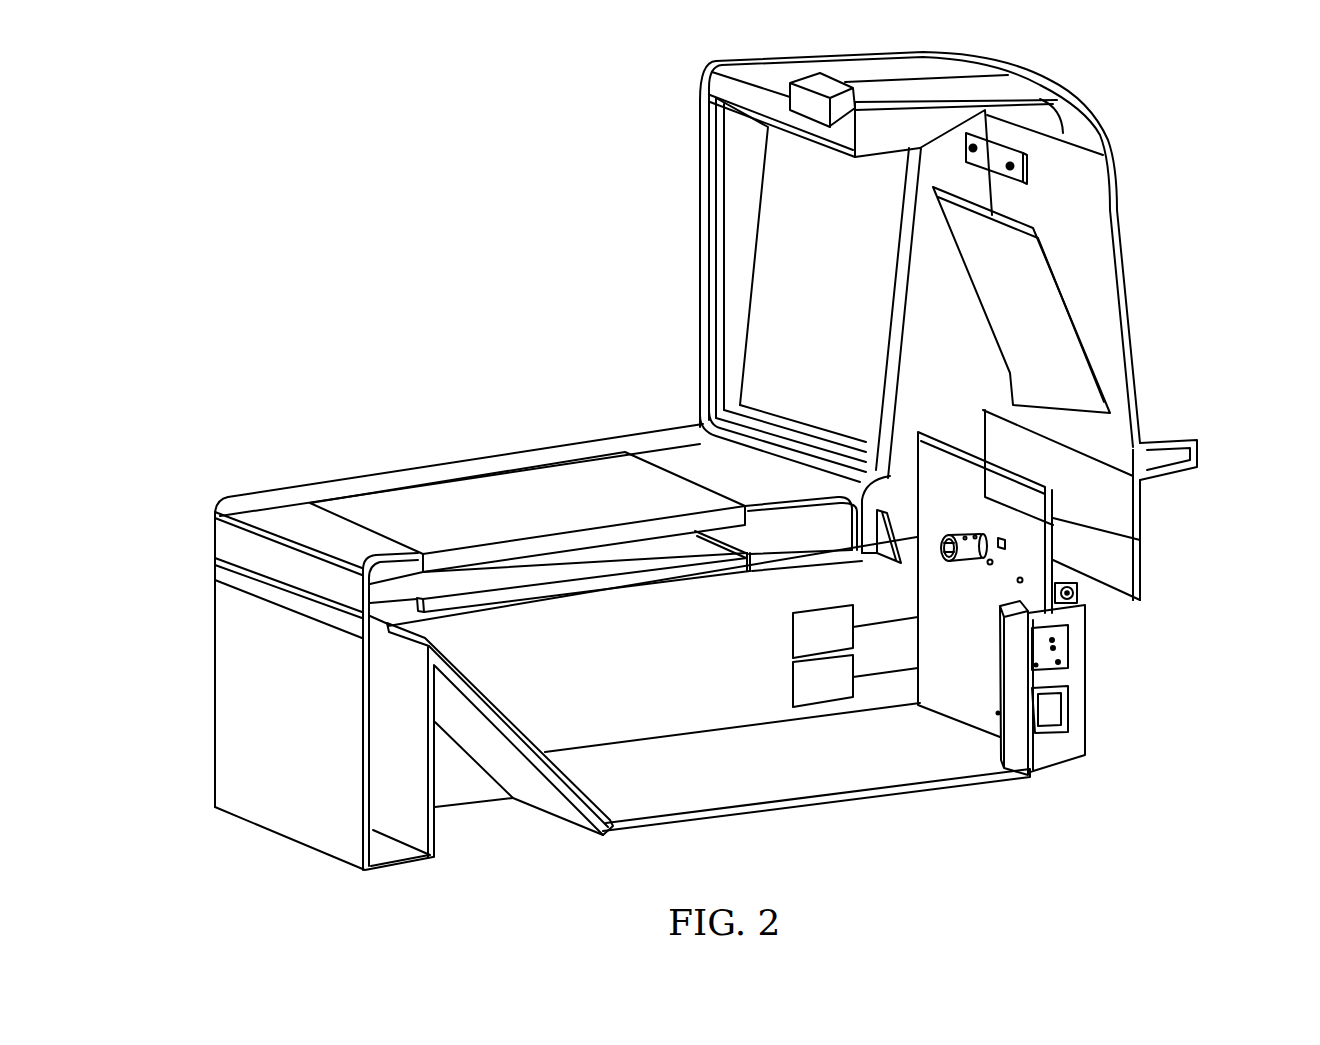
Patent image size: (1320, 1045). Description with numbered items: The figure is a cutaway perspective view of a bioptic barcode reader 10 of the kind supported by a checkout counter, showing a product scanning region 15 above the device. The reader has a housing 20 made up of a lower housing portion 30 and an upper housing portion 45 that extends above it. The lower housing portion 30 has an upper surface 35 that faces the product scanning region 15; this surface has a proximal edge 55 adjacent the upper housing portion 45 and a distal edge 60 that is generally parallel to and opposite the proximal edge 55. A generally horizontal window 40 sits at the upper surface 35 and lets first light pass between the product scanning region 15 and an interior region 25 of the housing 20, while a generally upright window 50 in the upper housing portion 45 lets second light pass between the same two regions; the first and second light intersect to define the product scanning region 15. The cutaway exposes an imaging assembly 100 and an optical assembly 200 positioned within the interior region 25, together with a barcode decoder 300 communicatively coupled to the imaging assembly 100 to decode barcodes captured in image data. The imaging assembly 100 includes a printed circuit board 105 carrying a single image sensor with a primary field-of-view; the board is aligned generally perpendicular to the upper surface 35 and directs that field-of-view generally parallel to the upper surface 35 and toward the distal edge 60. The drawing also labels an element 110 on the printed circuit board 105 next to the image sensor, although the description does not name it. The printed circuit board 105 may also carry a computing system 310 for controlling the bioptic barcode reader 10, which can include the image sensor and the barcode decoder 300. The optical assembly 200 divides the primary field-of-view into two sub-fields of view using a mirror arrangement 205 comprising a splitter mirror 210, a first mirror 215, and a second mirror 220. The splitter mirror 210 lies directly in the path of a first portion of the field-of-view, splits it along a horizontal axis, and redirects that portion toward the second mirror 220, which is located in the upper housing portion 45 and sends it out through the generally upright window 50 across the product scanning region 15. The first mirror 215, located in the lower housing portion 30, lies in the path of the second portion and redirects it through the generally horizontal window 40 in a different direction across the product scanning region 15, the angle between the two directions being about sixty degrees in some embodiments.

The bioptic barcode reader 10 is at (1197, 76).
The product scanning region 15 is at (368, 183).
The housing 20 is at (1157, 598).
The interior region 25 is at (630, 635).
The lower housing portion 30 is at (915, 793).
The upper surface 35 is at (578, 447).
The generally horizontal window 40 is at (443, 522).
The upper housing portion 45 is at (1128, 287).
The generally upright window 50 is at (773, 287).
The proximal edge 55 is at (703, 423).
The distal edge 60 is at (214, 505).
The imaging assembly 100 is at (1053, 523).
The printed circuit board 105 is at (983, 500).
The camera 110 is at (950, 566).
The optical assembly 200 is at (1118, 337).
The mirror arrangement 205 is at (1136, 525).
The splitter mirror 210 is at (882, 568).
The first mirror 215 is at (558, 769).
The second mirror 220 is at (1050, 265).
The barcode decoder 300 is at (846, 643).
The computing system 310 is at (846, 692).